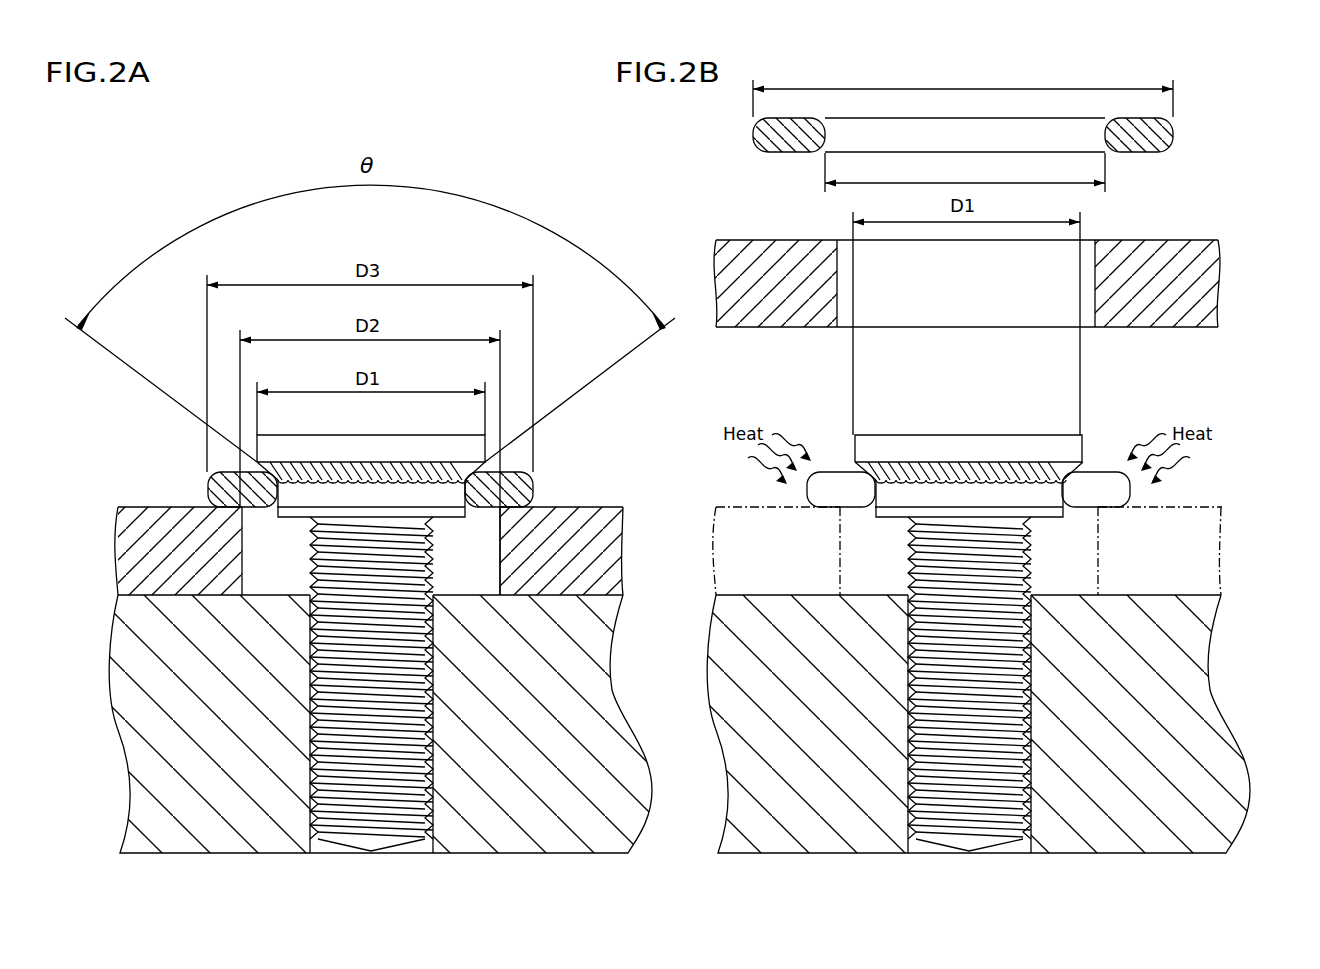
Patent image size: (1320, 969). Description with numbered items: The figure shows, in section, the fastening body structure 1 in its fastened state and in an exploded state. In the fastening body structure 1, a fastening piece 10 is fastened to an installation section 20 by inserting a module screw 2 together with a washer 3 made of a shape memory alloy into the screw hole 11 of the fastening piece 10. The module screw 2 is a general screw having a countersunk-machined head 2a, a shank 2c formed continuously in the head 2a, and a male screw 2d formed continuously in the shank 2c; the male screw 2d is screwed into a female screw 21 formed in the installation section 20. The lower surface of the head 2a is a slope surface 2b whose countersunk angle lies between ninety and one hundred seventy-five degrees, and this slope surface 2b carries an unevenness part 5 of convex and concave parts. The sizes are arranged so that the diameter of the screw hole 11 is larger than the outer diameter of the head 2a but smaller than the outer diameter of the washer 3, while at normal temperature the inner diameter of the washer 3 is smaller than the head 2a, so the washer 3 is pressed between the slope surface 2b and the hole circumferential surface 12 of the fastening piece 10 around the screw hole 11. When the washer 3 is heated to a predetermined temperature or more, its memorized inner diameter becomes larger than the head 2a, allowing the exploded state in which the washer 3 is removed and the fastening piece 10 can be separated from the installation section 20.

In FIG. 2A, the fastening body structure 1 is at (603, 412).
In FIG. 2A, the module screw 2 is at (445, 673).
In FIG. 2B, the module screw 2 is at (1043, 673).
In FIG. 2A, the head 2a is at (487, 435).
In FIG. 2B, the head 2a is at (1080, 455).
In FIG. 2A, the slope surface 2b is at (430, 480).
In FIG. 2B, the slope surface 2b is at (1028, 478).
In FIG. 2A, the shank 2c is at (465, 512).
In FIG. 2B, the shank 2c is at (1063, 512).
In FIG. 2A, the male screw 2d is at (400, 717).
In FIG. 2B, the male screw 2d is at (998, 717).
In FIG. 2A, the washer made of a shape memory alloy 3 is at (212, 472).
In FIG. 2B, the washer made of a shape memory alloy 3 is at (755, 140).
In FIG. 2A, the unevenness part 5 is at (428, 505).
In FIG. 2B, the unevenness part 5 is at (1026, 505).
In FIG. 2A, the fastening piece 10 is at (153, 562).
In FIG. 2B, the fastening piece 10 is at (1173, 278).
In FIG. 2A, the screw hole 11 is at (242, 508).
In FIG. 2B, the screw hole 11 is at (1097, 328).
In FIG. 2A, the hole circumferential surface 12 is at (212, 505).
In FIG. 2B, the hole circumferential surface 12 is at (1123, 240).
In FIG. 2A, the installation section 20 is at (590, 600).
In FIG. 2B, the installation section 20 is at (1188, 600).
In FIG. 2A, the female screw 21 is at (322, 846).
In FIG. 2B, the female screw 21 is at (920, 846).